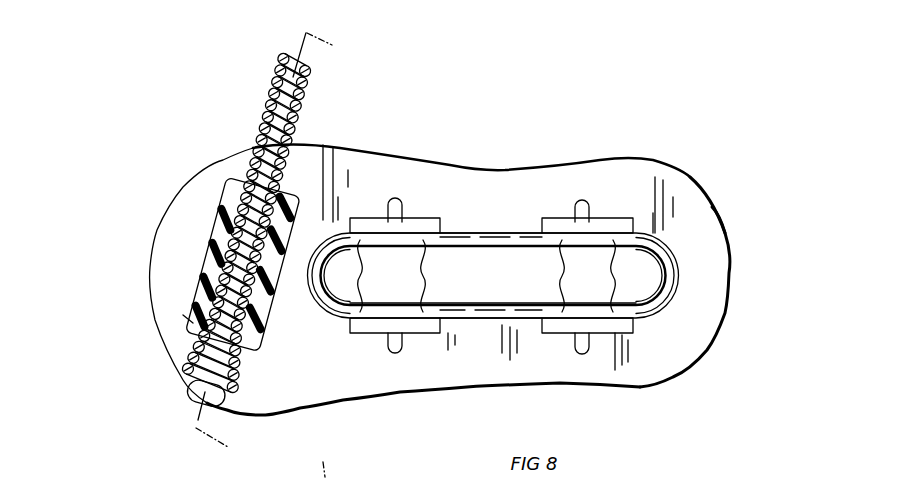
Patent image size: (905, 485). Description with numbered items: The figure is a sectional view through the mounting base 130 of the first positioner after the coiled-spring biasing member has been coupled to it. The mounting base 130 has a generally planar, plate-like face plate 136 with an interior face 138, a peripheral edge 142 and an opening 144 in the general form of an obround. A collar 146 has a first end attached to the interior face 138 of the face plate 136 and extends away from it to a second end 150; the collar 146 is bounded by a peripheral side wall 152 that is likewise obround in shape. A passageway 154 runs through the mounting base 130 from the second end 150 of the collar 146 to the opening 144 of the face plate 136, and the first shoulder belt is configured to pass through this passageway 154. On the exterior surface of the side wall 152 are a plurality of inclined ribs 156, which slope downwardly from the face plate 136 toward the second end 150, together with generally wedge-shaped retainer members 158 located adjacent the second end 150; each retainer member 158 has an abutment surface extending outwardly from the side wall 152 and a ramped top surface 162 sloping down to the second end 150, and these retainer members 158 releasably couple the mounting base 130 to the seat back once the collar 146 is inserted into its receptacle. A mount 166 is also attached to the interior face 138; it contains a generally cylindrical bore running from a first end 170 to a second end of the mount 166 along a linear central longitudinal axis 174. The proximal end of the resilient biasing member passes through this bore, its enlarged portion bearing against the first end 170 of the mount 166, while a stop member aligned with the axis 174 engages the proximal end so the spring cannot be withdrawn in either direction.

The mounting base 130 is at (690, 177).
The face plate 136 is at (712, 207).
The interior face 138 is at (712, 310).
The peripheral edge 142 is at (703, 352).
The opening 144 is at (452, 248).
The collar 146 is at (680, 258).
The second end 150 is at (676, 278).
The peripheral side wall 152 is at (482, 218).
The passageway 154 is at (482, 297).
The inclined ribs 156 is at (397, 197).
The retainer members 158 is at (372, 218).
The ramped top surface 162 is at (487, 276).
The mount 166 is at (196, 268).
The first end 170 is at (193, 323).
The central longitudinal axis 174 is at (230, 425).